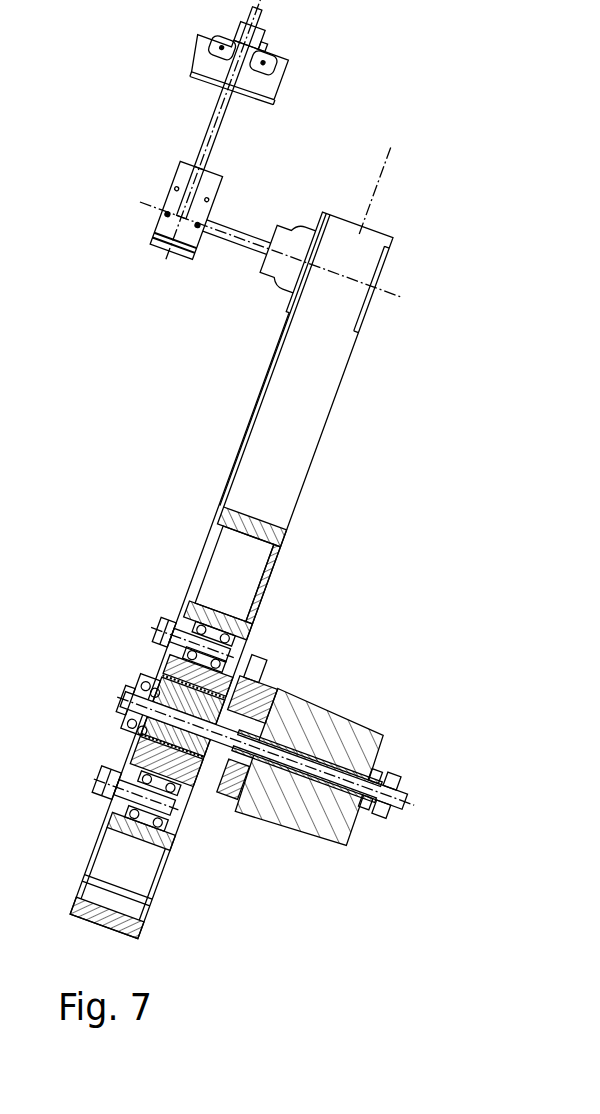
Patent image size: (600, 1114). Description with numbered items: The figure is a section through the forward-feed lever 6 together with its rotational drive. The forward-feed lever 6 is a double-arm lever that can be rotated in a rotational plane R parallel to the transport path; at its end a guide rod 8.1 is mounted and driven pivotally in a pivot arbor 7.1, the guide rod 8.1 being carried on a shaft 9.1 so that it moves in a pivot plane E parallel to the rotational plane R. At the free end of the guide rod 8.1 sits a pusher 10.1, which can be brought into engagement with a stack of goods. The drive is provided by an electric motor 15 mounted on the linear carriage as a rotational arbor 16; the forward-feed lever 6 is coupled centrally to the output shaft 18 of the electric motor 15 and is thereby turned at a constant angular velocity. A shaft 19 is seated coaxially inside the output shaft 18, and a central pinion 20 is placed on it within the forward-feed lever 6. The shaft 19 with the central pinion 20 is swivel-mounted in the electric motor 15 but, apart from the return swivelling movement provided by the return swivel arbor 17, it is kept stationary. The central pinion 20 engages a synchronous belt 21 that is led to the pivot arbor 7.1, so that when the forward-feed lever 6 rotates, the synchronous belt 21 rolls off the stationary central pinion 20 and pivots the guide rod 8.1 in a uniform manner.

The forward-feed lever 6 is at (305, 468).
The rotational plane R is at (383, 160).
The pivot plane E is at (165, 265).
The pivot arbor 7.1 is at (215, 260).
The guide rod 8.1 is at (205, 128).
The shaft 9.1 is at (258, 258).
The pusher 10.1 is at (205, 57).
The electric motor 15 is at (353, 730).
The rotational arbor 16 is at (142, 702).
The return swivel arbor 17 is at (275, 790).
The output shaft 18 is at (300, 703).
The shaft 19 is at (278, 786).
The central pinion 20 is at (256, 672).
The synchronous belt 21 is at (248, 587).